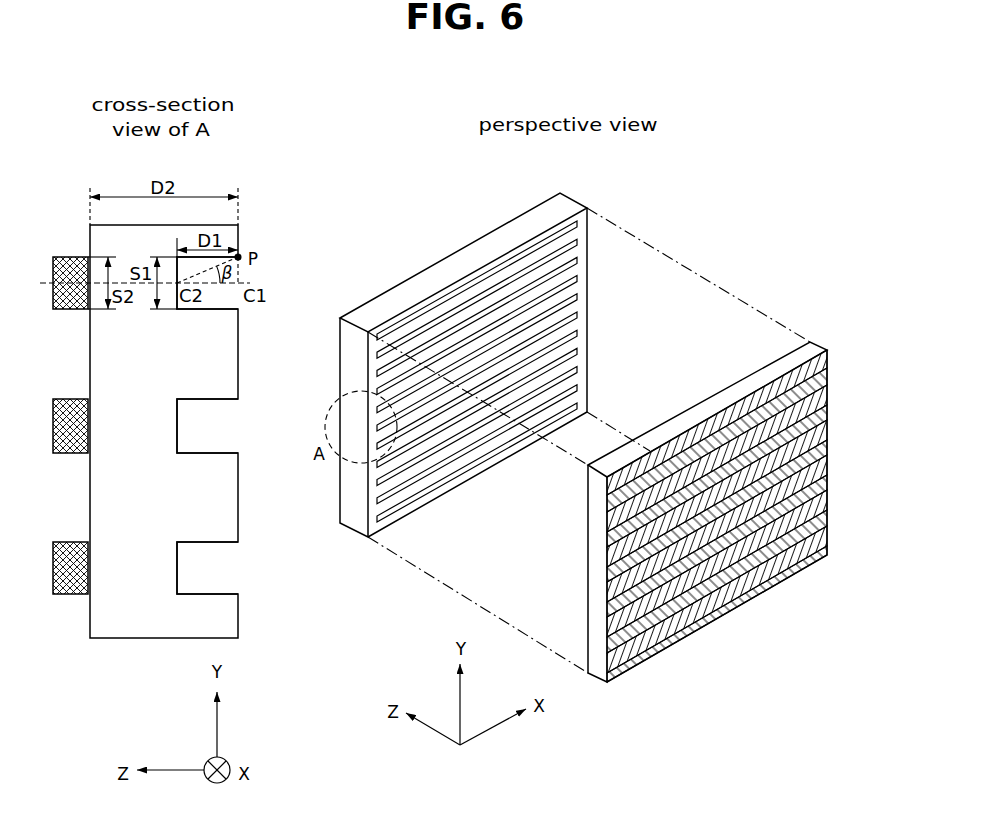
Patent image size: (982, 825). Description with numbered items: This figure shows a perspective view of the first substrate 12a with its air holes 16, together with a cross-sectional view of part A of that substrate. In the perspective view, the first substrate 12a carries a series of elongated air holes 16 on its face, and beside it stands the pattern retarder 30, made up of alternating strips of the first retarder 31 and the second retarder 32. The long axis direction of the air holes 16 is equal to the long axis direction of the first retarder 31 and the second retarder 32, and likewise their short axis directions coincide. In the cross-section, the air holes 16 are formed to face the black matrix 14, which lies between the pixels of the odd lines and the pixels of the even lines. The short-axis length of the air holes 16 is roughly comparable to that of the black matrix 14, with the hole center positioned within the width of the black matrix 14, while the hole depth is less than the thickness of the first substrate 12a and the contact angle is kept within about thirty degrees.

The first substrate 12a is at (165, 507).
The black matrix 14 is at (63, 257).
The air holes 16 is at (206, 399).
The pattern retarder 30 is at (738, 491).
The first retarder 31 is at (829, 358).
The second retarder 32 is at (829, 382).